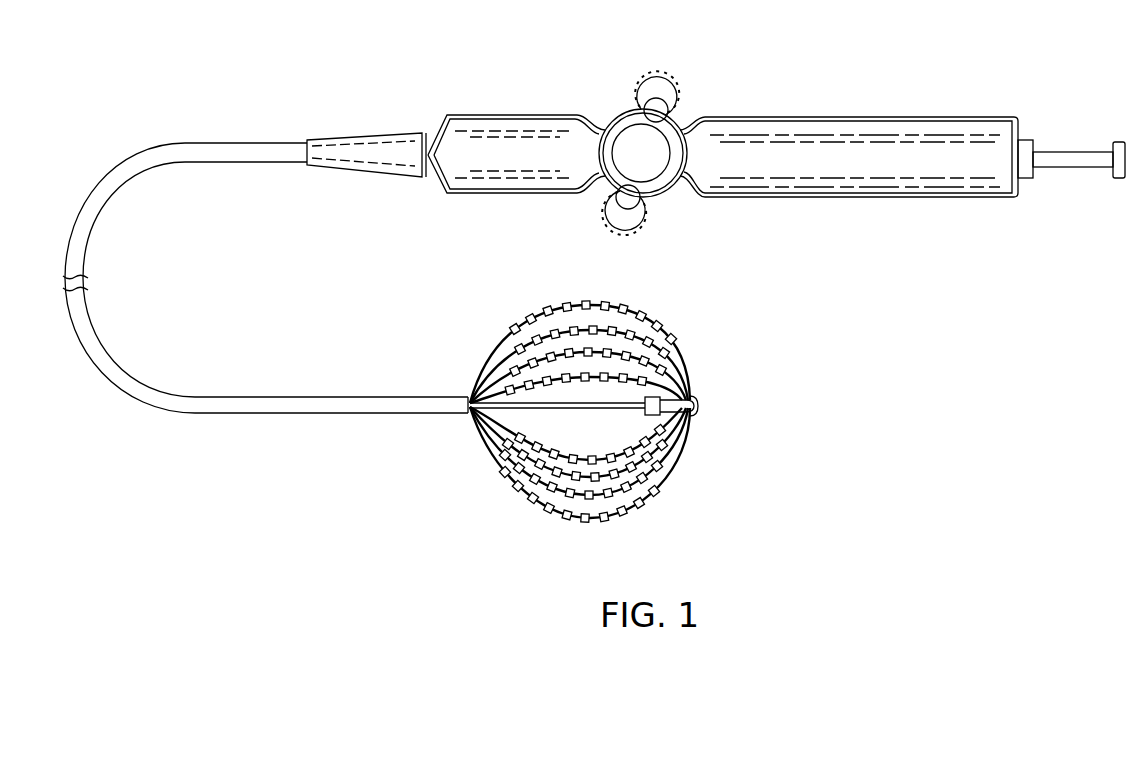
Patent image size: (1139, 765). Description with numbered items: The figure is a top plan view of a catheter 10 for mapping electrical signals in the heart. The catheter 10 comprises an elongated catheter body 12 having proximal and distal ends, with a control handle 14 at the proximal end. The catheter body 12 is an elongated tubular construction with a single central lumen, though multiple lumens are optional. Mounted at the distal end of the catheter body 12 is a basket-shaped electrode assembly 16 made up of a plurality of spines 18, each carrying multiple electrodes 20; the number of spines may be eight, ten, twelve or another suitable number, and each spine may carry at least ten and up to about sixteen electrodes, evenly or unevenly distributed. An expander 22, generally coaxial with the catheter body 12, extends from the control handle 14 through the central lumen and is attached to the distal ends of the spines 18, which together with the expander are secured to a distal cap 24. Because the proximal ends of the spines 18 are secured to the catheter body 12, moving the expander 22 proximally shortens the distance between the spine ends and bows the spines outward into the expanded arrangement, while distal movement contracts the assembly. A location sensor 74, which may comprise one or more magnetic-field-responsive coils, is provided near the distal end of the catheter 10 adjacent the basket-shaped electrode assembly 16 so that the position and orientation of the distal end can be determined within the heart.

The catheter 10 is at (321, 58).
The catheter body 12 is at (146, 148).
The control handle 14 is at (800, 198).
The basket-shaped electrode assembly 16 is at (596, 428).
The spine 18 is at (620, 352).
The electrode 20 is at (528, 478).
The expander 22 is at (540, 405).
The distal cap 24 is at (682, 420).
The location sensor 74 is at (665, 397).